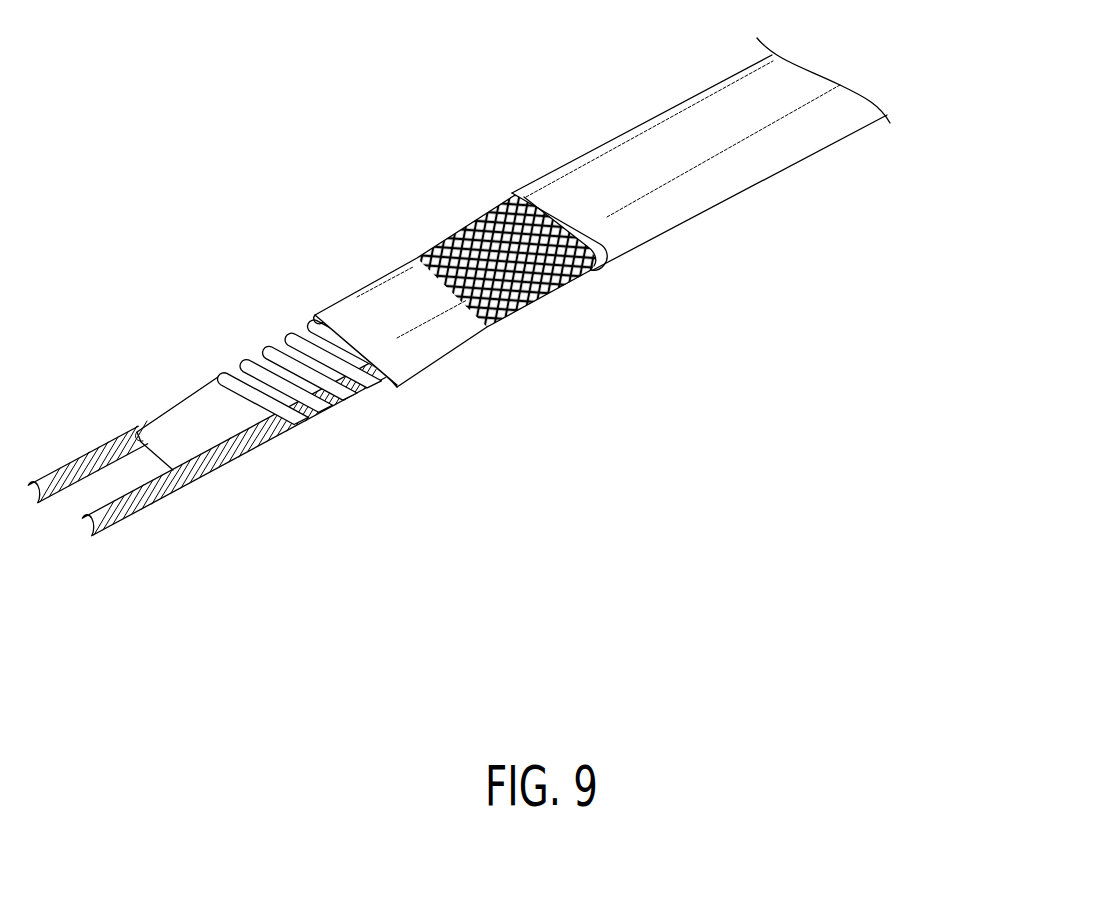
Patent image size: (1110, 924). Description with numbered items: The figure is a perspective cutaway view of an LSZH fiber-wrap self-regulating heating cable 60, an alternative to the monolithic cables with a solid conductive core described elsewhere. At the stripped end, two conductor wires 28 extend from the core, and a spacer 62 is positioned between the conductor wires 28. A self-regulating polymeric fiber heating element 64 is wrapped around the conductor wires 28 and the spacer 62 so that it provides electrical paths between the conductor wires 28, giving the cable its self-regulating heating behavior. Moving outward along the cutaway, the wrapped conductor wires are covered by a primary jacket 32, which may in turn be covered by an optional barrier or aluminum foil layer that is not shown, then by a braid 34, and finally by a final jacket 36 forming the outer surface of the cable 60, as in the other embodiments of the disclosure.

The fiber-wrap self-regulating heating cable 60 is at (312, 231).
The conductor wires 28 is at (147, 507).
The spacer 62 is at (212, 425).
The self-regulating polymeric fiber heating element 64 is at (348, 400).
The primary jacket 32 is at (438, 340).
The braid 34 is at (548, 303).
The final jacket 36 is at (648, 217).